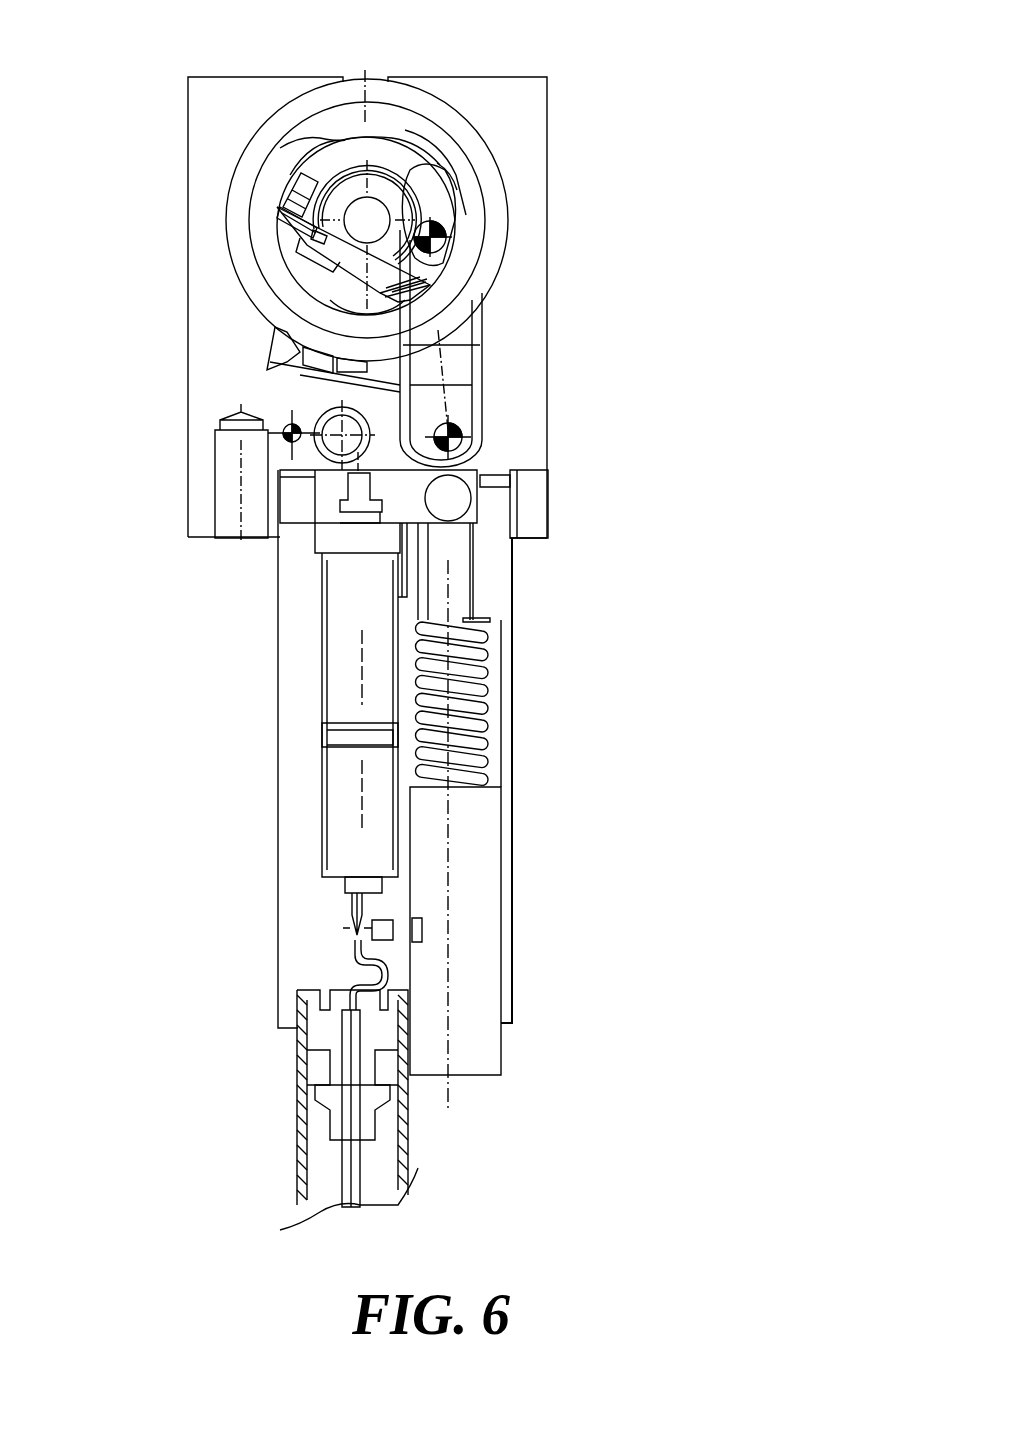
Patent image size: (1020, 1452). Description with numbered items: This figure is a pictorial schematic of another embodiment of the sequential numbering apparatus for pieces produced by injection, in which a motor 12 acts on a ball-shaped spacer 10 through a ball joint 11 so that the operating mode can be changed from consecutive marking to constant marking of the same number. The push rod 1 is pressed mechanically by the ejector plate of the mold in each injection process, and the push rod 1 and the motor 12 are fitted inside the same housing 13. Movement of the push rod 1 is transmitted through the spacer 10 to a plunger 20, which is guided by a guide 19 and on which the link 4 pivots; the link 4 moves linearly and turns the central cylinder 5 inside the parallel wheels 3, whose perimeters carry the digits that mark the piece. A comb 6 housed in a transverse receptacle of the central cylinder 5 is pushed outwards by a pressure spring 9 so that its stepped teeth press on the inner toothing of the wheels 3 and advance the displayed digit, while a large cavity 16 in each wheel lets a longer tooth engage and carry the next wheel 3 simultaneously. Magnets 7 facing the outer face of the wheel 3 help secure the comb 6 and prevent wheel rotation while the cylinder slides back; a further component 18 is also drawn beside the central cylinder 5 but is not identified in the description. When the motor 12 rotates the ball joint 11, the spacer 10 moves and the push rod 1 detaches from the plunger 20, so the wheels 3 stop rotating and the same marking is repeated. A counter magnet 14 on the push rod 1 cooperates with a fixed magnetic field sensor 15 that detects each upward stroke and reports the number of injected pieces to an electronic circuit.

The push rod 1 is at (483, 827).
The parallel wheels 3 is at (403, 110).
The link 4 is at (445, 335).
The central cylinder 5 is at (343, 147).
The comb 6 is at (320, 252).
The magnets 7 is at (313, 378).
The pressure spring 9 is at (362, 218).
The spacer 10 is at (487, 470).
The ball joint 11 is at (400, 500).
The motor 12 is at (345, 687).
The housing 13 is at (515, 975).
The counter magnet 14 is at (422, 922).
The fixed magnetic field sensor 15 is at (390, 940).
The large cavity 16 is at (287, 147).
The pivot block 18 is at (318, 236).
The guide 19 is at (472, 203).
The plunger 20 is at (478, 365).